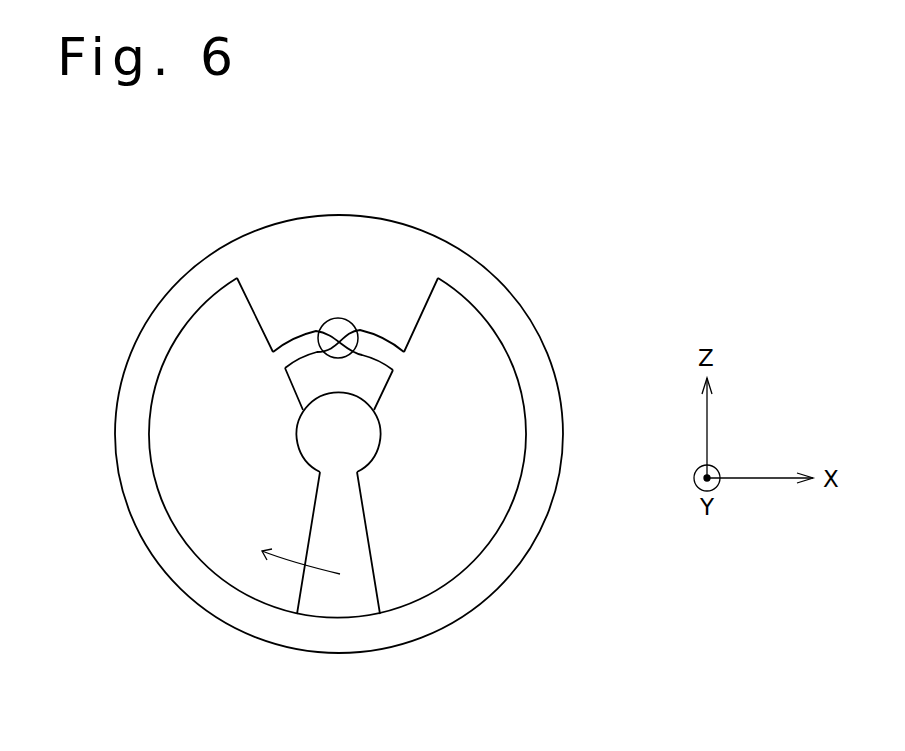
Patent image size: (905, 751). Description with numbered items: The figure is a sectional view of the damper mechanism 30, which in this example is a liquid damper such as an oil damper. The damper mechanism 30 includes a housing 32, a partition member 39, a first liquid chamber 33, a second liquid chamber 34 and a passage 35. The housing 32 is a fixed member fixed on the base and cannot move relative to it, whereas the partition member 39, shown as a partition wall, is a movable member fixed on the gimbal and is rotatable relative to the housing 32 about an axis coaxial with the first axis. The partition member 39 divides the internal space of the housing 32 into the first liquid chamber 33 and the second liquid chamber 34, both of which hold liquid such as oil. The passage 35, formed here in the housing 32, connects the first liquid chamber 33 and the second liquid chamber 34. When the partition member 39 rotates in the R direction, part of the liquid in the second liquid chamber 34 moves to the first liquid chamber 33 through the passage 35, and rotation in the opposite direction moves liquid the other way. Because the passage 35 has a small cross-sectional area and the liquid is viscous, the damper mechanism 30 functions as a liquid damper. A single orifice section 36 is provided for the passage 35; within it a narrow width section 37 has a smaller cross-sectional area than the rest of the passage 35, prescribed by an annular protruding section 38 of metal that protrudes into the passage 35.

The damper mechanism 30 is at (121, 184).
The housing 32 is at (527, 322).
The first liquid chamber 33 is at (470, 533).
The second liquid chamber 34 is at (208, 533).
The passage 35 is at (300, 347).
The orifice section 36 is at (393, 373).
The narrow width section 37 is at (360, 333).
The annular protruding section 38 is at (338, 318).
The partition member 39 is at (343, 598).